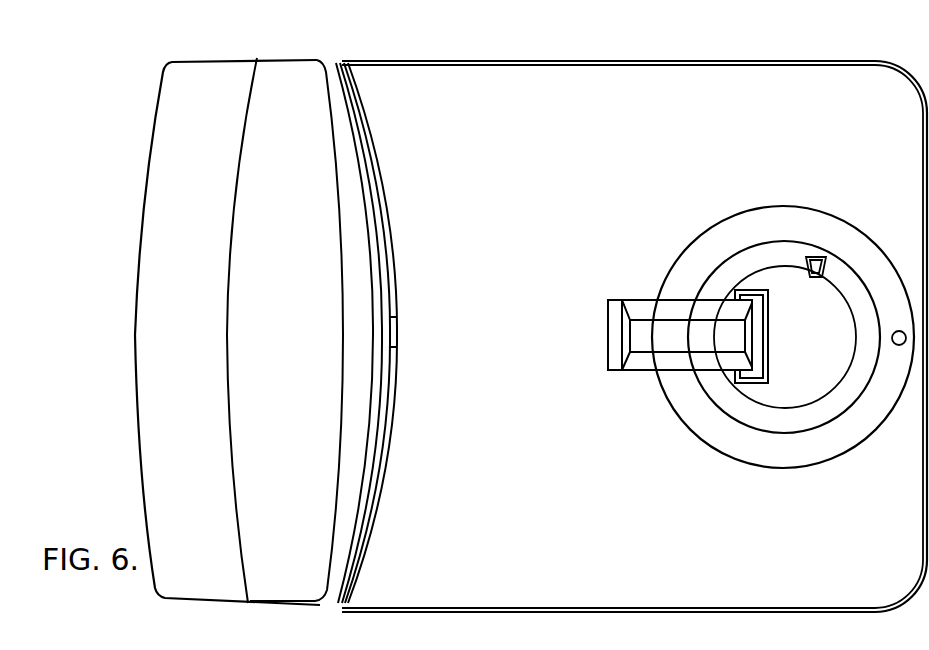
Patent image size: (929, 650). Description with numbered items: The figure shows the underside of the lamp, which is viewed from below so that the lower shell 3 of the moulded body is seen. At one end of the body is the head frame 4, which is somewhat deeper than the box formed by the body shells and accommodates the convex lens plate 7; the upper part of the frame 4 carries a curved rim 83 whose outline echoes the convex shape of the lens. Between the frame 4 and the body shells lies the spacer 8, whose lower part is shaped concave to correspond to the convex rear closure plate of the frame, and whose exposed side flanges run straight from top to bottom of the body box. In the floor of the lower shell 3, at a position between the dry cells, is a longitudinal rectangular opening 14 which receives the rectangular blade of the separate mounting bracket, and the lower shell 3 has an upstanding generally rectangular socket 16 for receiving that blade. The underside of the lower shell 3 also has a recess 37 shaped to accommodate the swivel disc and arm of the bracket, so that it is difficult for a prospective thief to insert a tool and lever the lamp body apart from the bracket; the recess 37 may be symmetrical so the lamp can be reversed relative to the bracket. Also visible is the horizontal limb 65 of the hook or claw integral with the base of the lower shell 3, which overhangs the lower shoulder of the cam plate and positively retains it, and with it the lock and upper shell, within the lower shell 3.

The lower shell 3 is at (480, 80).
The lens plate 7 is at (212, 82).
The frame 4 is at (288, 82).
The spacer 8 is at (333, 73).
The curved rim 83 is at (228, 335).
The recess 37 is at (695, 414).
The horizontal limb 65 is at (822, 263).
The longitudinal rectangular opening 14 is at (612, 330).
The socket 16 is at (650, 340).